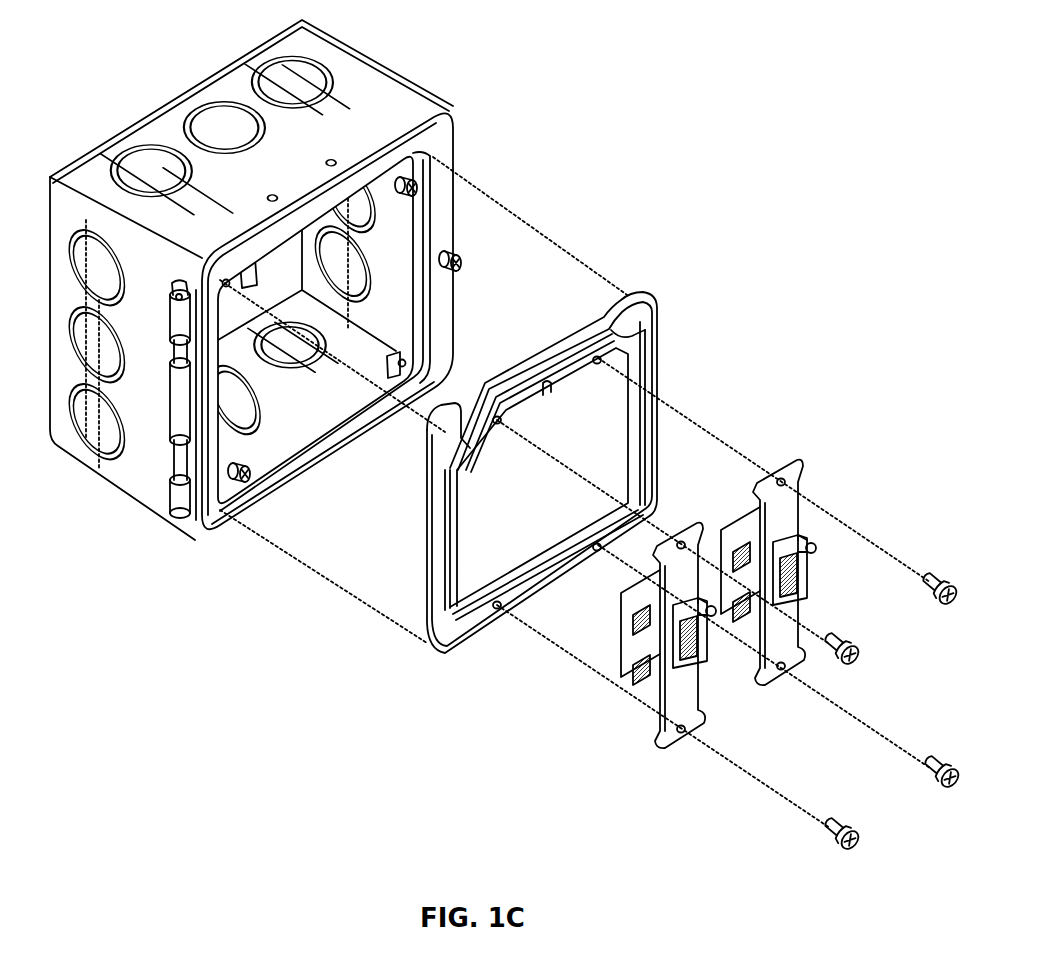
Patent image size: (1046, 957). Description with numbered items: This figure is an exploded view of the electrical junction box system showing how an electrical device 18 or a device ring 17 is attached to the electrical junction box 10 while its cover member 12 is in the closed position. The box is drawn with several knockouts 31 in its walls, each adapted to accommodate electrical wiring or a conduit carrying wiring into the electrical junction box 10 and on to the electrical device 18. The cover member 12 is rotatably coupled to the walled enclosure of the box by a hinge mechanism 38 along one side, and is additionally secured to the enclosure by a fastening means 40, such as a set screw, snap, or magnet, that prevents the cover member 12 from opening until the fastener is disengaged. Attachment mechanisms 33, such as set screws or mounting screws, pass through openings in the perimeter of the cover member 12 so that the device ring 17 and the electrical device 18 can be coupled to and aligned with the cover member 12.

The electrical junction box 10 is at (406, 40).
The cover member 12 is at (290, 306).
The device ring 17 is at (659, 325).
The electrical device 18 is at (808, 468).
The knockout 31 is at (140, 157).
The attachment mechanism 33 is at (415, 189).
The hinge mechanism 38 is at (180, 497).
The fastening means 40 is at (462, 263).